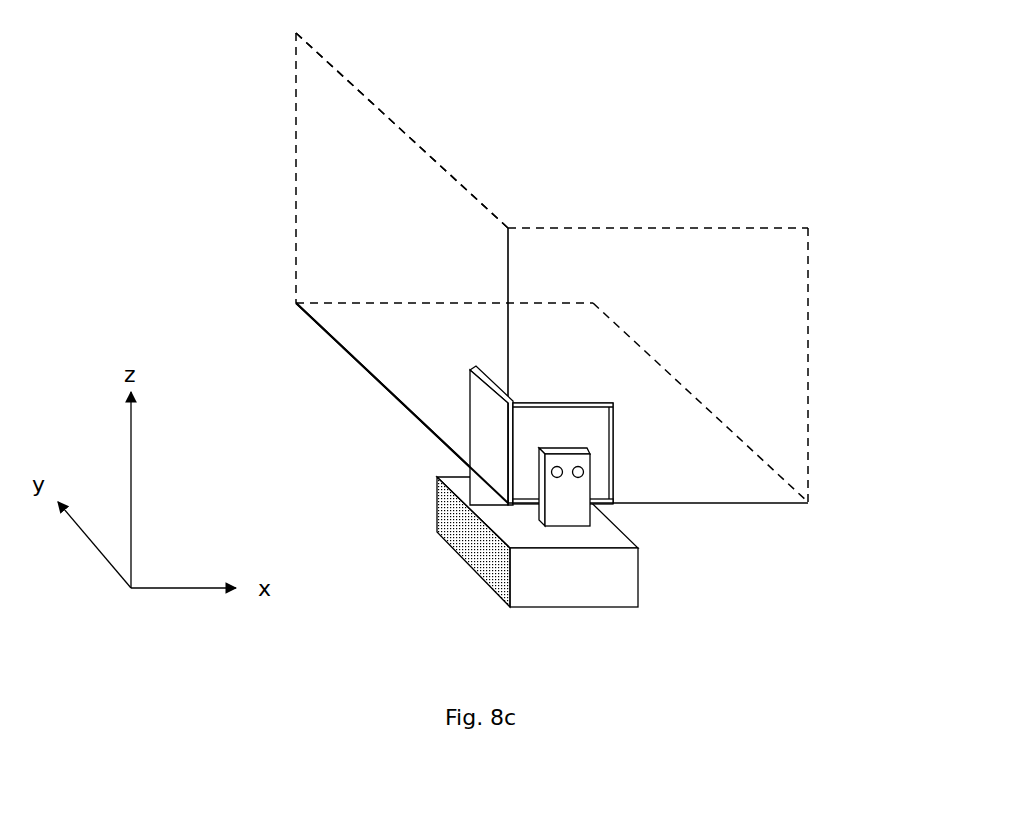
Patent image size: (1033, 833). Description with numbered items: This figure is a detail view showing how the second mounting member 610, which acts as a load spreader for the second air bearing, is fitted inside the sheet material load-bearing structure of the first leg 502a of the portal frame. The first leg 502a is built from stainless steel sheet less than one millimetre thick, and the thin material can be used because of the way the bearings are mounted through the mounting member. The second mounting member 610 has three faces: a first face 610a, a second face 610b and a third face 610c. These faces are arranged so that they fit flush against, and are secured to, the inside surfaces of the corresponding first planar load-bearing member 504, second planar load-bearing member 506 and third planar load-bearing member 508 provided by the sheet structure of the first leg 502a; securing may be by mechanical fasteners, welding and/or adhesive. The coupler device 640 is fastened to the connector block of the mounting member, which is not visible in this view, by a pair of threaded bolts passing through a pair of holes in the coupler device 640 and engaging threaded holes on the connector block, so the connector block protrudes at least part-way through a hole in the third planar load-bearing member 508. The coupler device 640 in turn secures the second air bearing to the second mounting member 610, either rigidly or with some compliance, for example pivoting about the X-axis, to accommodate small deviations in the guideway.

The first leg 502a is at (258, 130).
The first planar load-bearing member 504 is at (347, 357).
The second planar load-bearing member 506 is at (387, 118).
The third planar load-bearing member 508 is at (809, 277).
The second mounting member 610 is at (541, 381).
The first face 610a is at (607, 505).
The second face 610b is at (480, 436).
The third face 610c is at (590, 440).
The coupler device 640 is at (560, 492).